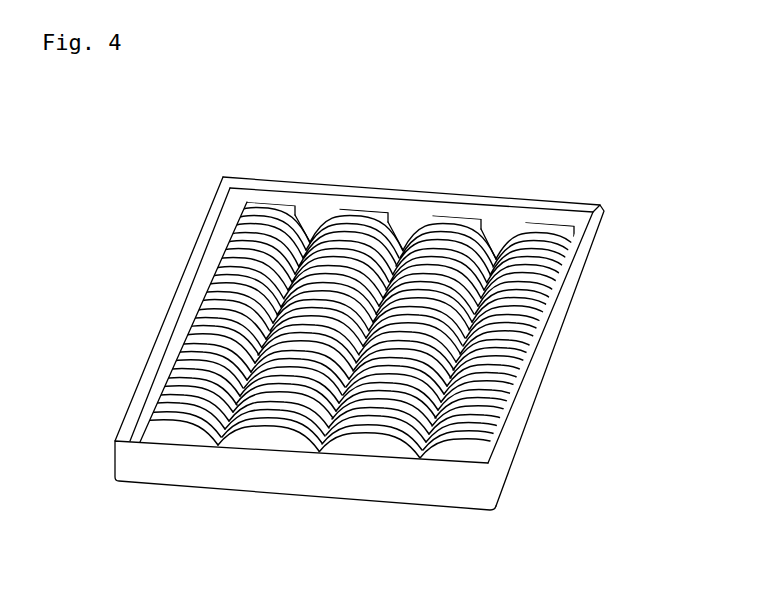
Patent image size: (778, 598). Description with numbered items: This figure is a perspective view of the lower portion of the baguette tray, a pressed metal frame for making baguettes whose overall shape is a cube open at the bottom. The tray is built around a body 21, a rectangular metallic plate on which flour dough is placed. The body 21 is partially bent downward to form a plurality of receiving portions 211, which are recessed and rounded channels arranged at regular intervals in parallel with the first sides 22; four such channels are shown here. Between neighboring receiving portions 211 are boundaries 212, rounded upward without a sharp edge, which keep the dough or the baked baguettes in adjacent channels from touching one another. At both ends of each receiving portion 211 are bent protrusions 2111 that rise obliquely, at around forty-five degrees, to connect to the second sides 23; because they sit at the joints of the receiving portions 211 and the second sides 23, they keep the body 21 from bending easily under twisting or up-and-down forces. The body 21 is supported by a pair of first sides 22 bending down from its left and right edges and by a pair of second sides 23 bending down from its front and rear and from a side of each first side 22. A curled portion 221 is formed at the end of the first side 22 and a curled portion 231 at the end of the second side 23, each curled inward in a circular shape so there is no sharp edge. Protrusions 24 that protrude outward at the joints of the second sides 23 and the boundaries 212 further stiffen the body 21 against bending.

The body 21 is at (403, 277).
The receiving portion 211 is at (527, 386).
The protrusion 2111 is at (565, 210).
The boundary 212 is at (545, 324).
The first side 22 is at (578, 281).
The curled portion 221 is at (187, 268).
The second side 23 is at (368, 482).
The curled portion 231 is at (420, 195).
The protrusion 24 is at (316, 213).